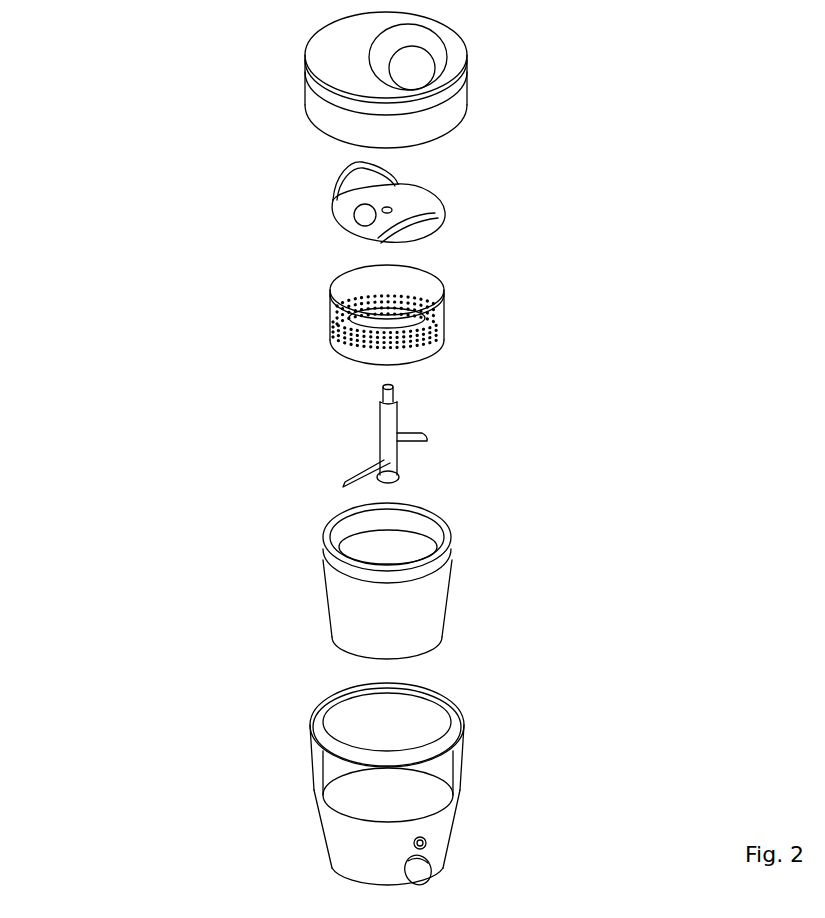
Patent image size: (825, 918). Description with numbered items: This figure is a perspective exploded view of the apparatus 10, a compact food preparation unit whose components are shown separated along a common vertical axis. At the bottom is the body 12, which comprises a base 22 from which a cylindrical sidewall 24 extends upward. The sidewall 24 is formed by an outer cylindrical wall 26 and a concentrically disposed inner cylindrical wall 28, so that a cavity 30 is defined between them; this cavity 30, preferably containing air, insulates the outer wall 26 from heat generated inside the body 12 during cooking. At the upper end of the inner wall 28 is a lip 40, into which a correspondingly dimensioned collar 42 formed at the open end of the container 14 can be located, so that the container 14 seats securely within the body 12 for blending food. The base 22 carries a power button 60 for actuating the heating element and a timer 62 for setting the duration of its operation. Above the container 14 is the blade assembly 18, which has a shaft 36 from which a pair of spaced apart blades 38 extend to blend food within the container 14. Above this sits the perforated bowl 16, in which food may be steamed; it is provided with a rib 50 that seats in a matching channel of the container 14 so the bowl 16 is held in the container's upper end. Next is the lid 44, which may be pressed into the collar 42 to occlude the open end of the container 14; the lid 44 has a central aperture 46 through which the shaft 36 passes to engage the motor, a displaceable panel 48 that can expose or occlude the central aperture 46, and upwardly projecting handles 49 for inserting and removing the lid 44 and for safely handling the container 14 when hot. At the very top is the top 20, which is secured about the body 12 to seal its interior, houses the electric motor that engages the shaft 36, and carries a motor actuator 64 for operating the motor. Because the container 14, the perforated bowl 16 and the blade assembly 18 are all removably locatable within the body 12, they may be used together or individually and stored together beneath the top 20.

The apparatus 10 is at (200, 462).
The body 12 is at (381, 786).
The container 14 is at (435, 600).
The perforated bowl 16 is at (432, 333).
The blade assembly 18 is at (410, 436).
The top 20 is at (457, 58).
The base 22 is at (347, 852).
The cylindrical sidewall 24 is at (302, 735).
The outer cylindrical wall 26 is at (465, 750).
The inner cylindrical wall 28 is at (445, 785).
The cavity 30 is at (320, 760).
The shaft 36 is at (383, 428).
The blades 38 is at (423, 438).
The lip 40 is at (450, 723).
The collar 42 is at (327, 543).
The lid 44 is at (443, 210).
The central aperture 46 is at (392, 207).
The panel 48 is at (360, 218).
The handles 49 is at (350, 177).
The rib 50 is at (332, 287).
The power button 60 is at (426, 842).
The timer 62 is at (430, 862).
The motor actuator 64 is at (423, 72).